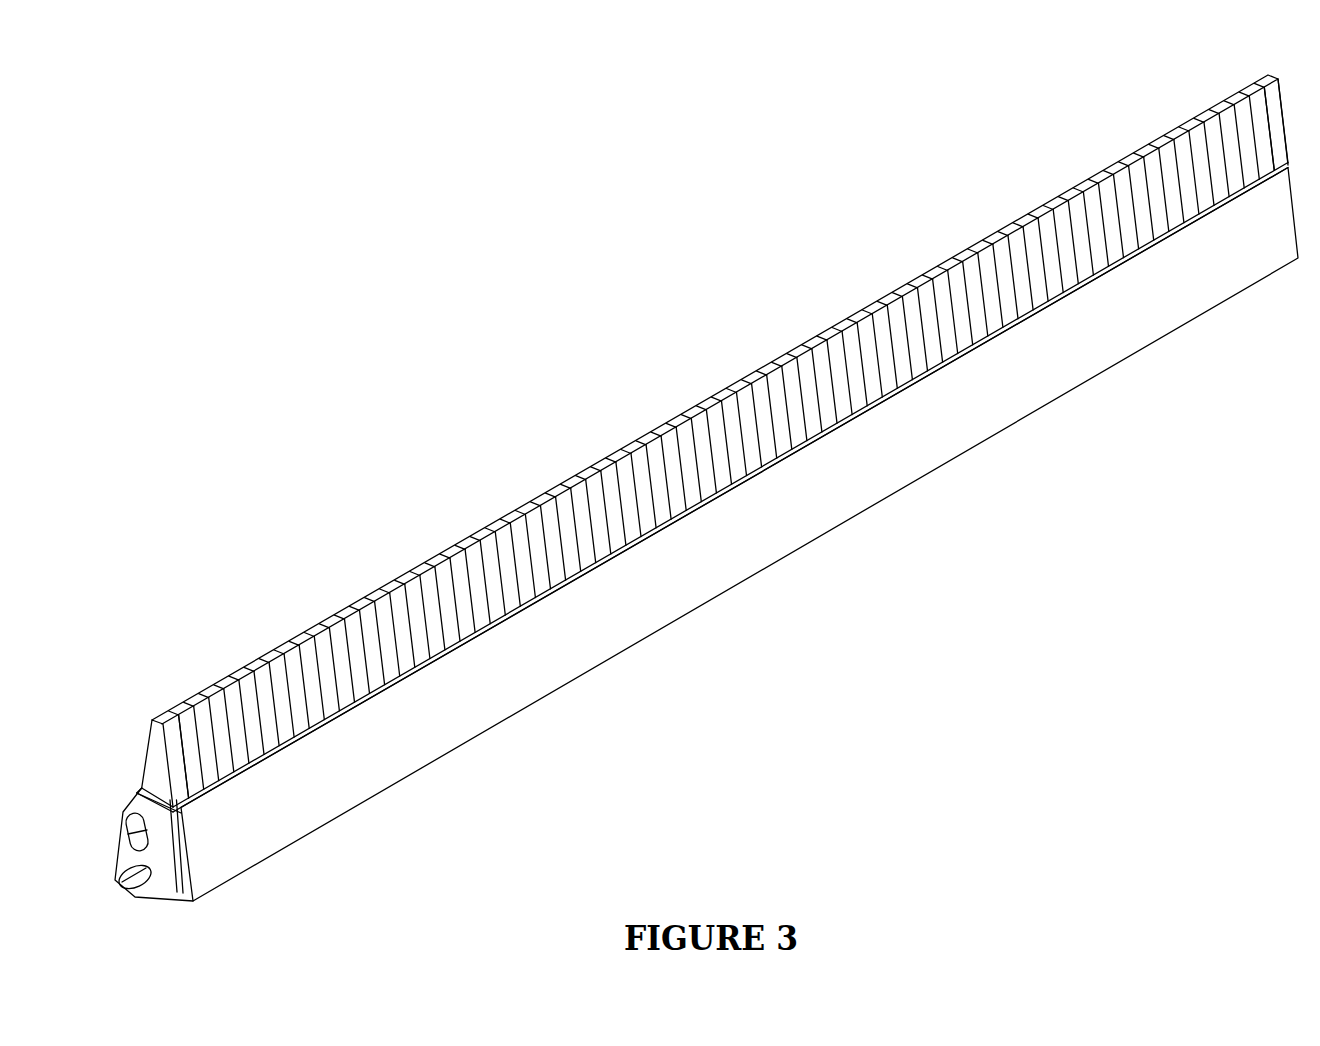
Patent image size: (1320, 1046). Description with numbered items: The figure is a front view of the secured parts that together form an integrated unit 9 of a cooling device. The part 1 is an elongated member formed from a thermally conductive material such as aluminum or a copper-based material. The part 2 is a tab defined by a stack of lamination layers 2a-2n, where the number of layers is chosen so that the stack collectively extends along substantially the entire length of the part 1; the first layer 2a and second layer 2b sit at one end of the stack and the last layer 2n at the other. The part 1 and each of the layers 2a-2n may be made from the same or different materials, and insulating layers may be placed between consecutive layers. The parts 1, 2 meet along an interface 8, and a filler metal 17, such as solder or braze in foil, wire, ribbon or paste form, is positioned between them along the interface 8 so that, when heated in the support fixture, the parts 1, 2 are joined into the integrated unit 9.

The part 1 is at (588, 653).
The part 2 is at (684, 381).
The lamination layer 2a is at (170, 742).
The lamination layer 2b is at (180, 712).
The lamination layer 2n is at (1267, 74).
The interface 8 is at (738, 488).
The integrated unit 9 is at (813, 618).
The filler metal 17 is at (918, 390).